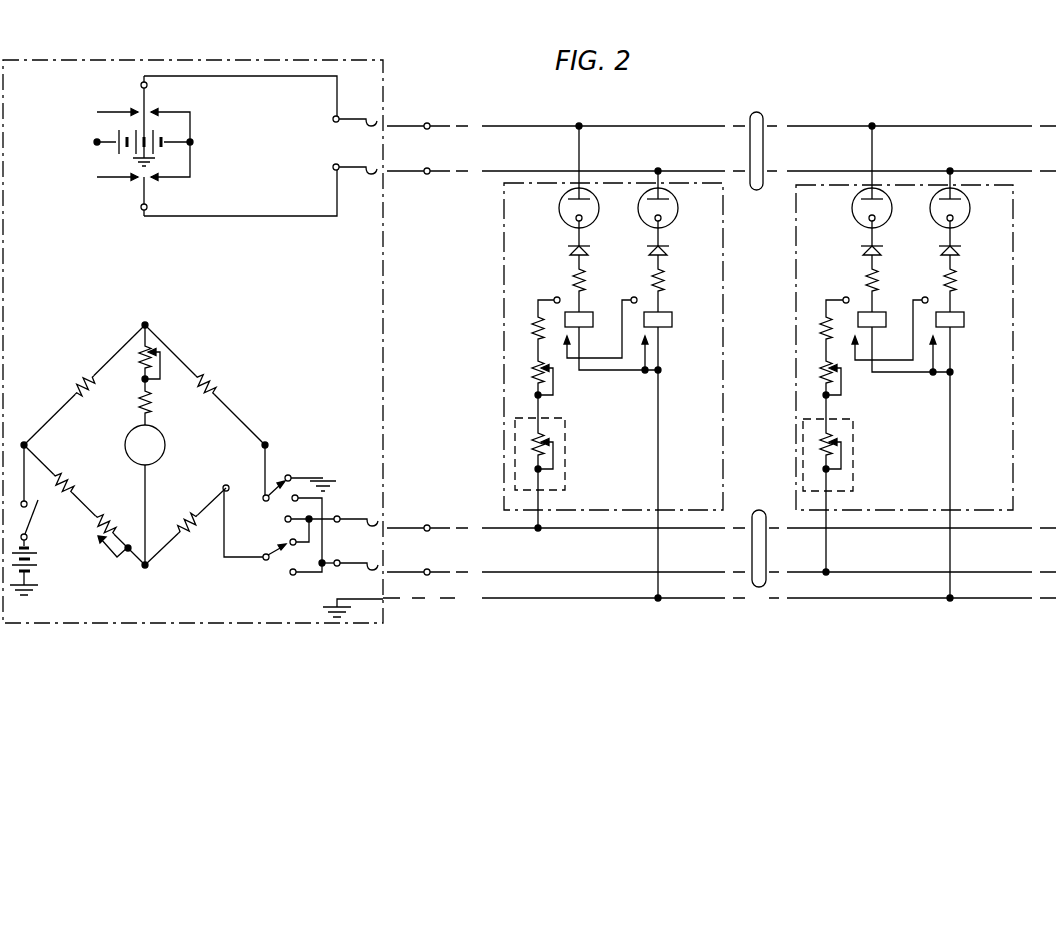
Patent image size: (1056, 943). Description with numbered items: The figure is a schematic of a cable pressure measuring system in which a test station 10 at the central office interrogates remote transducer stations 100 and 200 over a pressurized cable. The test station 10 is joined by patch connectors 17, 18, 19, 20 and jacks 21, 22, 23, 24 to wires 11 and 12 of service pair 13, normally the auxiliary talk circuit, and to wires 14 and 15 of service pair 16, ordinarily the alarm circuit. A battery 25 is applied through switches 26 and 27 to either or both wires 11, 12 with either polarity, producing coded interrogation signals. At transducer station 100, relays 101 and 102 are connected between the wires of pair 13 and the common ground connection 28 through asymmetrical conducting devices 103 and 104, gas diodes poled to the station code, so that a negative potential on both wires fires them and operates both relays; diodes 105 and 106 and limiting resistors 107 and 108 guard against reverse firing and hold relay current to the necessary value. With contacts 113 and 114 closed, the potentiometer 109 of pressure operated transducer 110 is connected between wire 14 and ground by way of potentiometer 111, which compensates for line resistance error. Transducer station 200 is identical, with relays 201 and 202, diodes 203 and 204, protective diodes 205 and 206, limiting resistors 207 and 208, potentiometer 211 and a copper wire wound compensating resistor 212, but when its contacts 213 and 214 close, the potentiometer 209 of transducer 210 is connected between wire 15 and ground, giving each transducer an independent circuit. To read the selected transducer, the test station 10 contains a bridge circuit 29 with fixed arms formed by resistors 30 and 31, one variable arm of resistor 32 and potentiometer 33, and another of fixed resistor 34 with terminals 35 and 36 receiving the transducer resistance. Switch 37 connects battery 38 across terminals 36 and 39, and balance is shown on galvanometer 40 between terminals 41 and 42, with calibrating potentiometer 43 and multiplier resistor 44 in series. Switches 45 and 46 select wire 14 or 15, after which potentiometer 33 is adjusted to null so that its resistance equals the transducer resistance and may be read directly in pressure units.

The test station 10 is at (383, 63).
The wire 11 is at (520, 126).
The wire 12 is at (520, 171).
The service pair 13 is at (760, 111).
The wire 14 is at (490, 530).
The wire 15 is at (490, 574).
The service pair 16 is at (760, 510).
The patch connector 17 is at (413, 125).
The patch connector 18 is at (413, 170).
The patch connector 19 is at (408, 528).
The patch connector 20 is at (408, 572).
The jack 21 is at (347, 118).
The jack 22 is at (347, 166).
The jack 23 is at (364, 505).
The jack 24 is at (364, 549).
The battery 25 is at (160, 132).
The switch 26 is at (148, 97).
The switch 27 is at (148, 195).
The ground connection 28 is at (568, 598).
The bridge circuit 29 is at (212, 455).
The resistor 30 is at (80, 378).
The resistor 31 is at (210, 378).
The resistor 32 is at (62, 472).
The potentiometer 33 is at (126, 500).
The fixed resistor 34 is at (194, 537).
The terminal 35 is at (230, 484).
The terminal 36 is at (268, 443).
The switch 37 is at (35, 525).
The battery 38 is at (38, 565).
The terminal 39 is at (20, 442).
The galvanometer 40 is at (150, 466).
The terminal 41 is at (152, 320).
The terminal 42 is at (146, 578).
The calibrating potentiometer 43 is at (163, 374).
The multiplier resistor 44 is at (150, 417).
The switch 45 is at (276, 505).
The switch 46 is at (275, 568).
The transducer station 100 is at (504, 253).
The relay 101 is at (585, 311).
The relay 102 is at (664, 311).
The asymmetrical conducting device 103 is at (558, 208).
The asymmetrical conducting device 104 is at (677, 210).
The diode 105 is at (566, 249).
The diode 106 is at (670, 249).
The limiting resistor 107 is at (586, 275).
The limiting resistor 108 is at (665, 275).
The potentiometer 109 is at (545, 426).
The pressure operated transducer 110 is at (565, 470).
The potentiometer 111 is at (531, 367).
The contact 113 is at (562, 352).
The contact 114 is at (649, 349).
The transducer station 200 is at (796, 254).
The relay 201 is at (878, 311).
The relay 202 is at (956, 311).
The diode 203 is at (851, 207).
The diode 204 is at (969, 205).
The diode 205 is at (859, 248).
The diode 206 is at (960, 246).
The limiting resistor 207 is at (864, 272).
The limiting resistor 208 is at (957, 275).
The potentiometer 209 is at (838, 424).
The transducer 210 is at (853, 470).
The potentiometer 211 is at (818, 370).
The resistor 212 is at (818, 326).
The contact 213 is at (850, 352).
The contact 214 is at (930, 352).